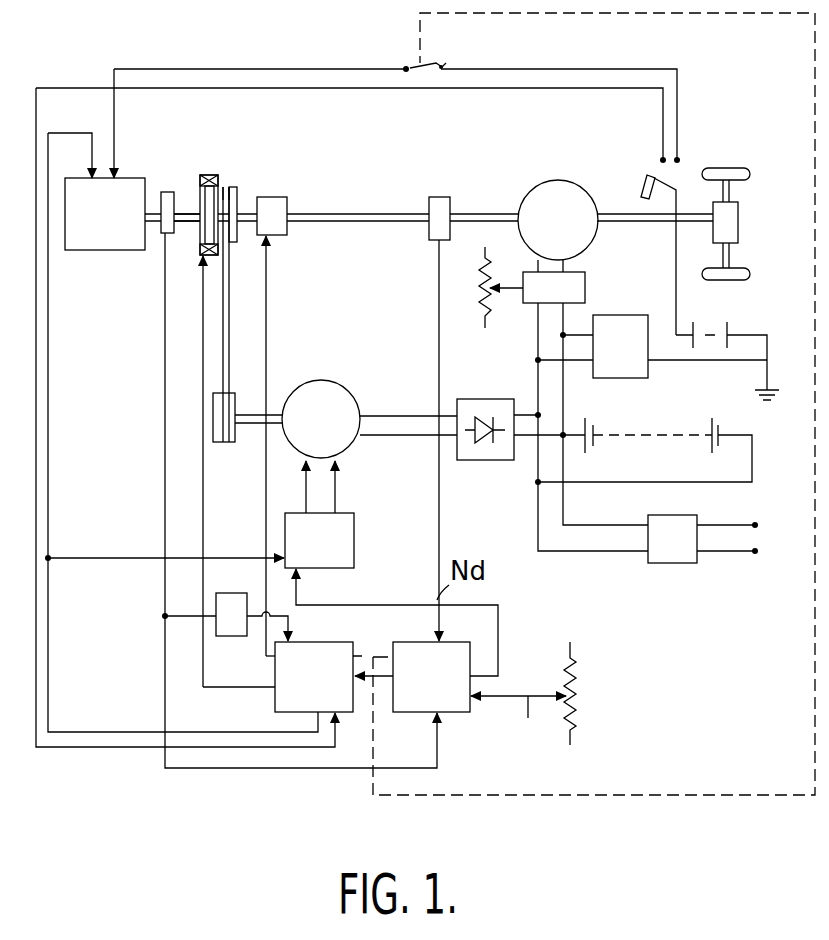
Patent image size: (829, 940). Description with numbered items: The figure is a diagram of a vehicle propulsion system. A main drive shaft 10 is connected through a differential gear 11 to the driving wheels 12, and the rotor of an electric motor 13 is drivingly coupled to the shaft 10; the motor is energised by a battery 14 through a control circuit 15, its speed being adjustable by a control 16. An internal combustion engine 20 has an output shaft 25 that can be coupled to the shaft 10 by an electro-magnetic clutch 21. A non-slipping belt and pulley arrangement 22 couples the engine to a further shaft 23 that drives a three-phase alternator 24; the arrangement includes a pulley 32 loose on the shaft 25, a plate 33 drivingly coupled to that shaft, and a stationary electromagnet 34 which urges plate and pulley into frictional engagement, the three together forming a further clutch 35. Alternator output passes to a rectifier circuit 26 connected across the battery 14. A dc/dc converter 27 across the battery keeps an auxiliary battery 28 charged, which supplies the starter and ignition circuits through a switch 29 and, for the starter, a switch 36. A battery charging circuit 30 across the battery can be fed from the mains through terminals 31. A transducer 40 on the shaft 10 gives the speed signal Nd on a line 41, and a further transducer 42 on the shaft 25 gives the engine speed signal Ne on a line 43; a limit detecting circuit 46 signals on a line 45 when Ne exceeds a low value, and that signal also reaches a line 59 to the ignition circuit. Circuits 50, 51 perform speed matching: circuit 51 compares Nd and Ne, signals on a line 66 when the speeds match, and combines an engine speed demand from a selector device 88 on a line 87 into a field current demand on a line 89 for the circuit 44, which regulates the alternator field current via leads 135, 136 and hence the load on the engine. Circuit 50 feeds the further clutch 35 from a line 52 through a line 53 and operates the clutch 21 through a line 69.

The main drive shaft 10 is at (342, 222).
The differential gear 11 is at (728, 224).
The driving wheels 12 is at (735, 172).
The electric motor 13 is at (567, 203).
The battery 14 is at (665, 437).
The control circuit 15 is at (568, 290).
The control 16 is at (490, 306).
The internal combustion engine 20 is at (105, 235).
The electro-magnetic clutch 21 is at (272, 200).
The belt and pulley arrangement 22 is at (228, 346).
The further shaft 23 is at (252, 420).
The three-phase alternator 24 is at (323, 400).
The output shaft 25 is at (188, 212).
The rectifier circuit 26 is at (468, 452).
The dc/dc converter 27 is at (630, 356).
The auxiliary battery 28 is at (733, 331).
The switch 29 is at (684, 168).
The battery charging circuit 30 is at (674, 546).
The terminals 31 is at (758, 550).
The pulley 32 is at (236, 232).
The plate 33 is at (203, 228).
The stationary electromagnet 34 is at (215, 176).
The further clutch 35 is at (233, 181).
The switch 36 is at (408, 58).
The transducer 40 is at (440, 212).
The line 41 is at (439, 292).
The further transducer 42 is at (166, 200).
The line 43 is at (165, 658).
The circuit 44 is at (336, 546).
The line 45 is at (295, 627).
The limit detecting circuit 46 is at (225, 618).
The circuit 50 is at (290, 696).
The circuit 51 is at (446, 699).
The line 52 is at (120, 749).
The line 53 is at (203, 578).
The line 59 is at (48, 406).
The line 66 is at (377, 672).
The line 69 is at (268, 335).
The line 87 is at (518, 723).
The selector device 88 is at (582, 692).
The line 89 is at (498, 623).
The lead 135 is at (307, 502).
The lead 136 is at (338, 490).